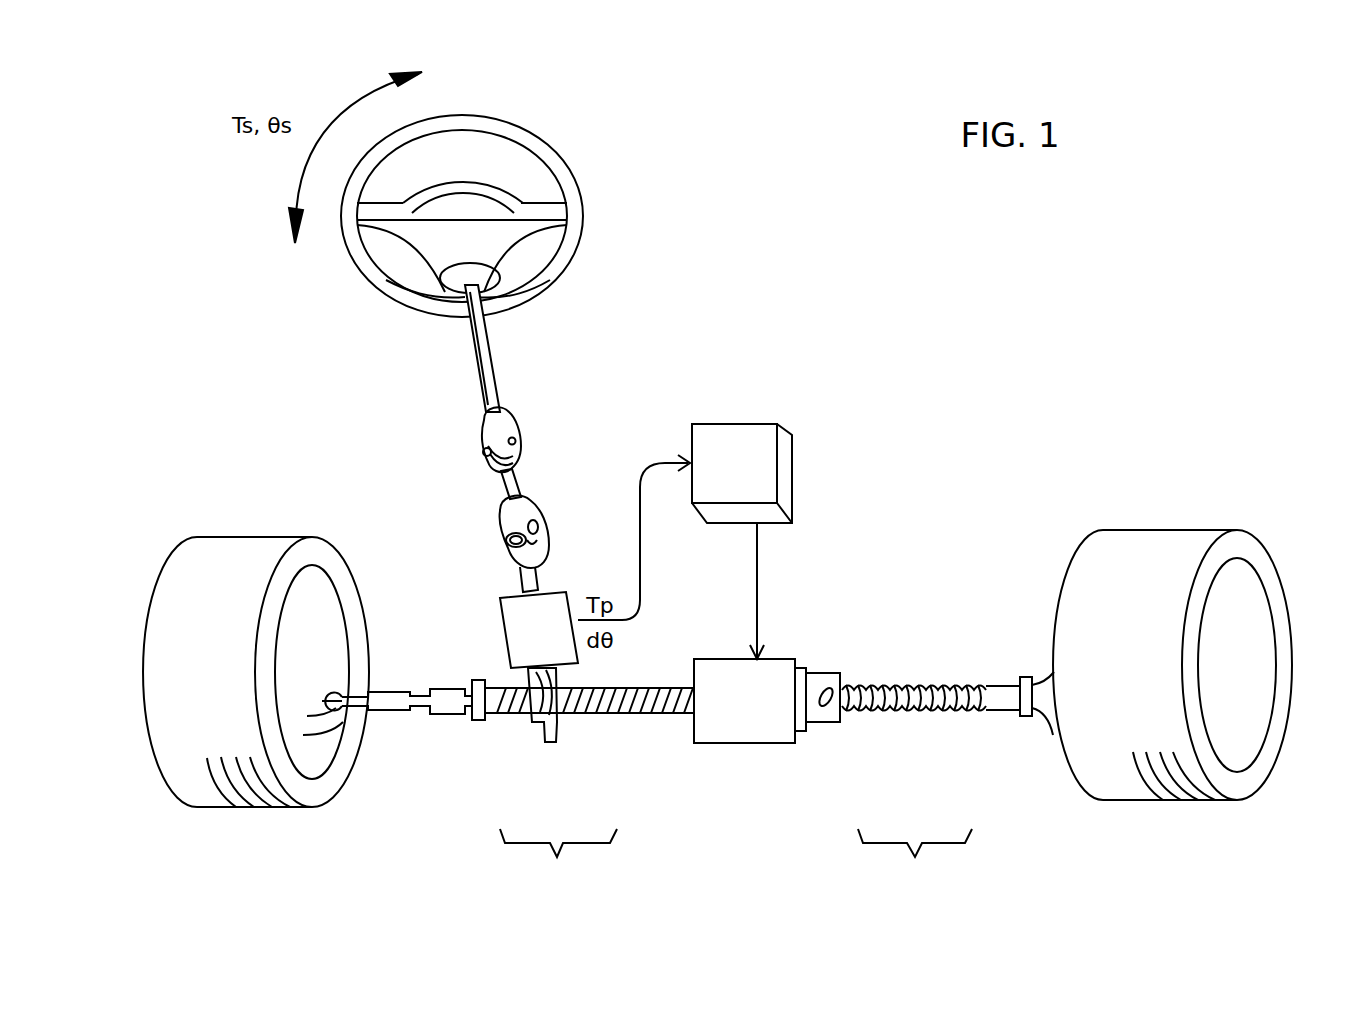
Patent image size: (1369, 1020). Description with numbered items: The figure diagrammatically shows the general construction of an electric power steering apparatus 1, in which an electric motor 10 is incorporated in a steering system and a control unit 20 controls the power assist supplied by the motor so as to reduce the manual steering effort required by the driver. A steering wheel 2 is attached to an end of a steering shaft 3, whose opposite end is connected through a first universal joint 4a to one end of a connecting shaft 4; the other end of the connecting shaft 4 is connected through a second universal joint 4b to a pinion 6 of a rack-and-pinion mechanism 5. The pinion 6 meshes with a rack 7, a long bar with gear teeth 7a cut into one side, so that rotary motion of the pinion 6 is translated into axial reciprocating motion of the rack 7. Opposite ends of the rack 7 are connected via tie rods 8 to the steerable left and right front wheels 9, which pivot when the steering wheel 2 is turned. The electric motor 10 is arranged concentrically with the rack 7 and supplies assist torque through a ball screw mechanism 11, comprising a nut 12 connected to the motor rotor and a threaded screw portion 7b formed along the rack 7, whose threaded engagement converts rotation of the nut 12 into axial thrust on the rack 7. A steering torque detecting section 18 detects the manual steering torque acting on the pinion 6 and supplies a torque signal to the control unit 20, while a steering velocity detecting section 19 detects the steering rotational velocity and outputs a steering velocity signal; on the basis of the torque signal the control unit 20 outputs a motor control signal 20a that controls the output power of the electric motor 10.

The electric power steering apparatus 1 is at (695, 239).
The steering wheel 2 is at (556, 155).
The steering shaft 3 is at (488, 346).
The connecting shaft 4 is at (517, 488).
The first universal joint 4a is at (508, 416).
The second universal joint 4b is at (528, 511).
The rack-and-pinion mechanism 5 is at (558, 862).
The pinion 6 is at (535, 714).
The rack 7 is at (752, 724).
The gear teeth 7a is at (574, 706).
The threaded screw portion 7b is at (928, 703).
The tie rods 8 is at (385, 706).
The front wheels 9 is at (232, 806).
The electric motor 10 is at (743, 730).
The ball screw mechanism 11 is at (915, 862).
The nut 12 is at (828, 717).
The steering torque detecting section 18 is at (507, 642).
The steering velocity detecting section 19 is at (502, 612).
The control unit 20 is at (788, 467).
The motor control signal 20a is at (760, 578).